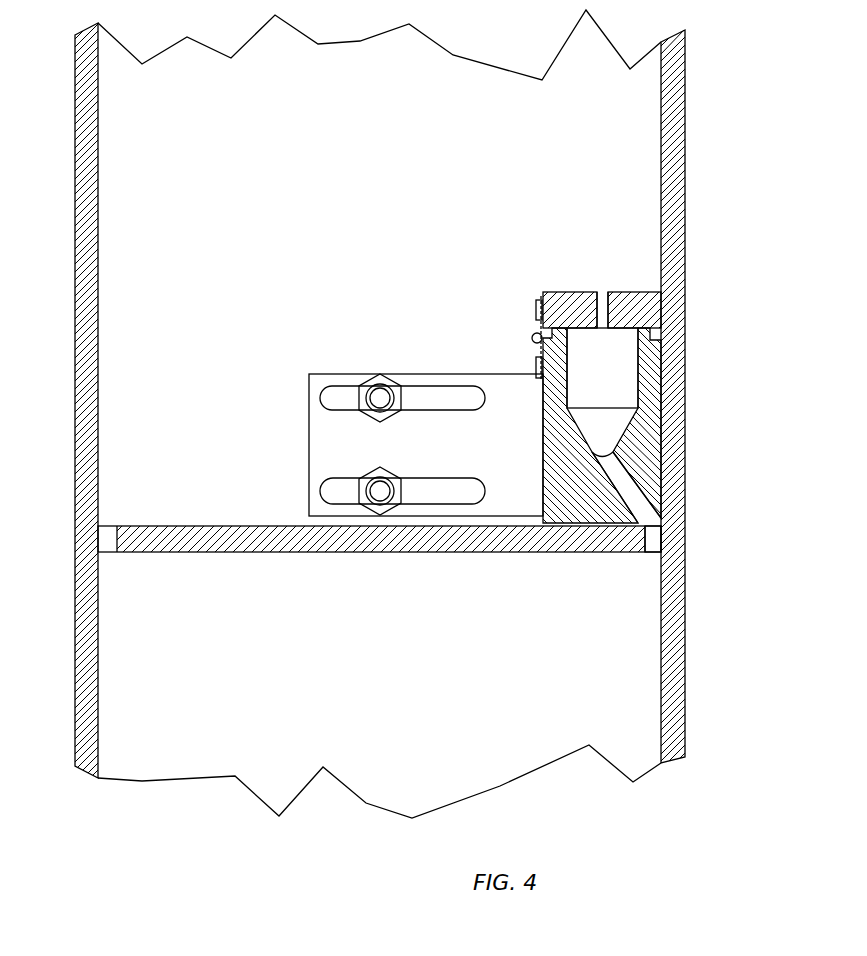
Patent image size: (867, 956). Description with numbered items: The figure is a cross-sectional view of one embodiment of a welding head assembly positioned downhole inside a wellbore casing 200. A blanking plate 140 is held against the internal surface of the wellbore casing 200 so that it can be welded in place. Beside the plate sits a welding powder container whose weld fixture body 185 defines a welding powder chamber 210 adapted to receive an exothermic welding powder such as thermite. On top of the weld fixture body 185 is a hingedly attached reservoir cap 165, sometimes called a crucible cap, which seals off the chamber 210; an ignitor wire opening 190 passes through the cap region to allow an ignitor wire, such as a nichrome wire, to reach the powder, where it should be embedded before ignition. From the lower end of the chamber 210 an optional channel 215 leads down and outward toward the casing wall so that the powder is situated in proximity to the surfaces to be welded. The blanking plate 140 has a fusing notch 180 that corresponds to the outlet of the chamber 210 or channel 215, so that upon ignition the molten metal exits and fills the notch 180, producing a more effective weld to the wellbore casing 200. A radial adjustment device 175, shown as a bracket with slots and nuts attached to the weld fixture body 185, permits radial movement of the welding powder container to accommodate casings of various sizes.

The blanking plate 140 is at (338, 562).
The reservoir cap 165 is at (547, 280).
The radial adjustment device 175 is at (330, 365).
The fusing notch 180 is at (642, 567).
The weld fixture body 185 is at (535, 463).
The ignitor wire opening 190 is at (598, 282).
The wellbore casing 200 is at (687, 202).
The welding powder chamber 210 is at (617, 382).
The channel 215 is at (643, 485).